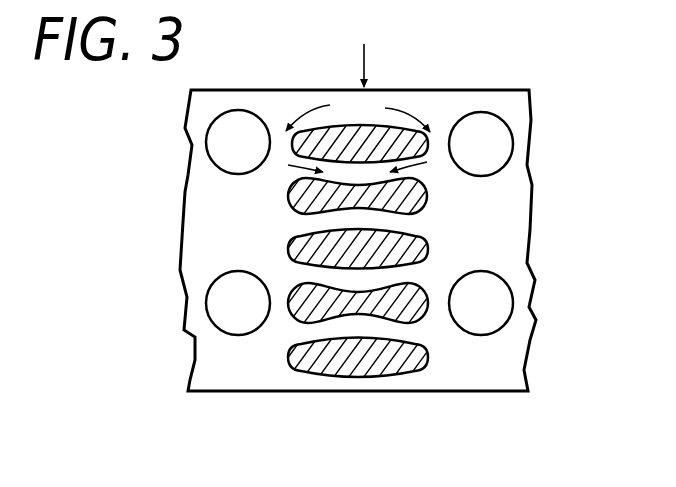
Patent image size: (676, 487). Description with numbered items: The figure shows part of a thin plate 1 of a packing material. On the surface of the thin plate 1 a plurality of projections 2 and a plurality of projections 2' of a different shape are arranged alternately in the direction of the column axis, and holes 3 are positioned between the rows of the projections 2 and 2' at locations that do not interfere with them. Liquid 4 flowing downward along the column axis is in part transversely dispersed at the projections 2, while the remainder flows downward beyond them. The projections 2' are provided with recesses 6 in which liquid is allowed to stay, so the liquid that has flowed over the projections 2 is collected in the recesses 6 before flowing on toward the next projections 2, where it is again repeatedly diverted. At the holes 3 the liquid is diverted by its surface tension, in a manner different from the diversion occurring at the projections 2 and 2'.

The thin plate 1 is at (503, 372).
The projections 2 is at (374, 105).
The projections different in shape 2' is at (425, 193).
The holes 3 is at (497, 298).
The liquid 4 is at (366, 55).
The recesses 6 is at (355, 180).